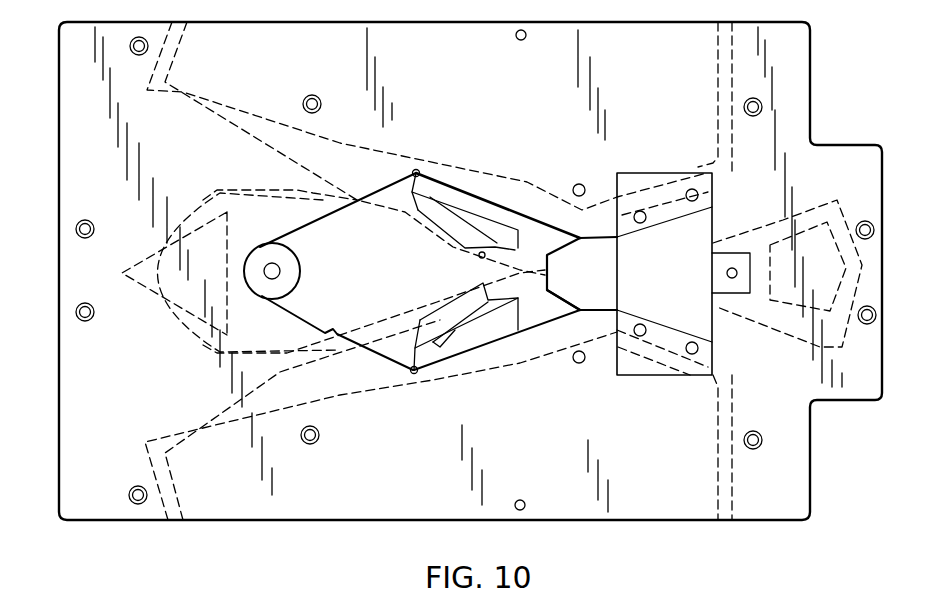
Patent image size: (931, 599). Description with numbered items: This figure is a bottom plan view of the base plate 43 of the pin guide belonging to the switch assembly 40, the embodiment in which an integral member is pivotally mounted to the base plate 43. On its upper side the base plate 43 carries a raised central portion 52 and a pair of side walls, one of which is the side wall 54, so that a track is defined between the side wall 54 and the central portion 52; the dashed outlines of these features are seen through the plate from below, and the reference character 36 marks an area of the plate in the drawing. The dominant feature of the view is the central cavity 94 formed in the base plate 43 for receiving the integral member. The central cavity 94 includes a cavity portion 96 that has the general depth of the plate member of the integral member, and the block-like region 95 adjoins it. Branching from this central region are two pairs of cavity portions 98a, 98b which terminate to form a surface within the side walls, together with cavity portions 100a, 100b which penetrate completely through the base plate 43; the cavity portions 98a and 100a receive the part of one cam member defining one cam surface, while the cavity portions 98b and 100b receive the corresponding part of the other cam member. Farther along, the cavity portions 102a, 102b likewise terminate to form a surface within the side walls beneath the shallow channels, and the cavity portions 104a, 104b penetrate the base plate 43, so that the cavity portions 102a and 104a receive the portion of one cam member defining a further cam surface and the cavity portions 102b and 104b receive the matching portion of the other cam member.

The switch assembly 40 is at (810, 86).
The base plate 36 is at (478, 172).
The base plate 43 is at (488, 512).
The raised central portion 52 is at (188, 333).
The side wall 54 is at (437, 345).
The central cavity 94 is at (557, 313).
The slide block 95 is at (648, 274).
The cavity portion 96 is at (332, 272).
The cavity portion 98a is at (512, 212).
The cavity portion 98b is at (507, 333).
The cavity portion 100a is at (485, 222).
The cavity portion 100b is at (477, 323).
The cavity portion 102a is at (427, 207).
The cavity portion 102b is at (435, 342).
The cavity portion 104a is at (467, 247).
The cavity portion 104b is at (448, 305).